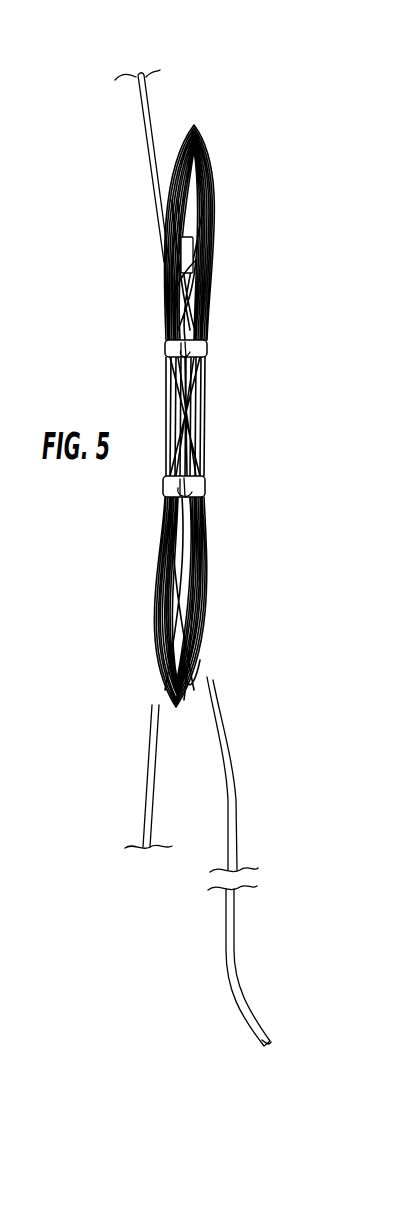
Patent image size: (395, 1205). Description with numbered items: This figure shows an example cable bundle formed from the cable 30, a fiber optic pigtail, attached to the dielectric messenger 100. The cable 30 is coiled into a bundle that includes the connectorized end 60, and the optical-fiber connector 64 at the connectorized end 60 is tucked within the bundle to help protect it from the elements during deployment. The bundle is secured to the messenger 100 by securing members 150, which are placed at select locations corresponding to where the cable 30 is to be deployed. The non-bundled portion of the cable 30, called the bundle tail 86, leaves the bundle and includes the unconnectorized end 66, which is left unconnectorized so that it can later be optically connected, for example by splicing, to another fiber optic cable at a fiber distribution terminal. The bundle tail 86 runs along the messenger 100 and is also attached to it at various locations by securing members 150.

The cable 30 is at (226, 94).
The messenger 100 is at (148, 96).
The optical-fiber connector 64 is at (183, 254).
The connectorized end 60 is at (200, 287).
The securing member 150 is at (205, 346).
The bundle tail 86 is at (222, 708).
The unconnectorized end 66 is at (268, 1048).